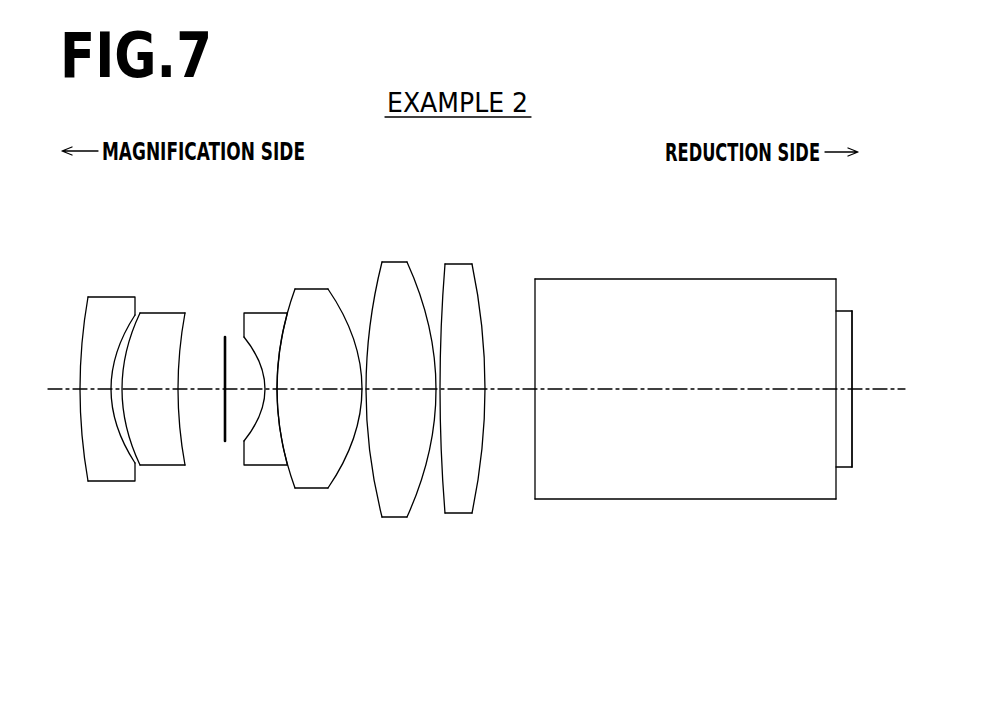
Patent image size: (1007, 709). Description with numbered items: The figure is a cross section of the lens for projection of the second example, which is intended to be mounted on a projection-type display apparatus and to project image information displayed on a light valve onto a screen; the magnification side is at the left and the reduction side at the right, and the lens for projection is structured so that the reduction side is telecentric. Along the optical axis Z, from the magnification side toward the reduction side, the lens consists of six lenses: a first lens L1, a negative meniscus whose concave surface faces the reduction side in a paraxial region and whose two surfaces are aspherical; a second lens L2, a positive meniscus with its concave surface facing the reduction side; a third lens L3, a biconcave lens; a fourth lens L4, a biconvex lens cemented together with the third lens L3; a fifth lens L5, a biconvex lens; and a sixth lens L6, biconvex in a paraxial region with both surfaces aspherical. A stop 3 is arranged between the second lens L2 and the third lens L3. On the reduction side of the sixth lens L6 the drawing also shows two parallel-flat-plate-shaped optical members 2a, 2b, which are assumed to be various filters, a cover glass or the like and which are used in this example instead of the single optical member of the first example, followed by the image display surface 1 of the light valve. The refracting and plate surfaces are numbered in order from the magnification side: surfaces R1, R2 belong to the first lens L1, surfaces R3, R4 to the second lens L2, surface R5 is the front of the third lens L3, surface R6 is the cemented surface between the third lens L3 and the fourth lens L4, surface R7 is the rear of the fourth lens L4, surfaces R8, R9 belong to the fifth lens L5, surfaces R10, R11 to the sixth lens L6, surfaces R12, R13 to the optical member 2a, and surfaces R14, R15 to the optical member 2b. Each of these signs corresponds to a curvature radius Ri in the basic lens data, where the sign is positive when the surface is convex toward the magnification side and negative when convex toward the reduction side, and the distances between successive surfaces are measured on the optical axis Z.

The first lens L1 is at (91, 387).
The second lens L2 is at (155, 387).
The third lens L3 is at (261, 387).
The fourth lens L4 is at (319, 370).
The fifth lens L5 is at (389, 406).
The sixth lens L6 is at (460, 406).
The stop 3 is at (223, 353).
The optical axis Z is at (57, 387).
The optical member 2a is at (680, 421).
The optical member 2b is at (839, 421).
The image display surface 1 is at (855, 322).
The first surface R1 is at (86, 462).
The second surface R2 is at (132, 462).
The third surface R3 is at (137, 453).
The fourth surface R4 is at (183, 447).
The fifth surface R5 is at (248, 443).
The sixth surface R6 is at (285, 463).
The seventh surface R7 is at (286, 388).
The eighth surface R8 is at (354, 468).
The ninth surface R9 is at (377, 485).
The tenth surface R10 is at (419, 497).
The eleventh surface R11 is at (445, 508).
The twelfth surface R12 is at (480, 482).
The thirteenth surface R13 is at (535, 482).
The fourteenth surface R14 is at (838, 483).
The fifteenth surface R15 is at (857, 465).